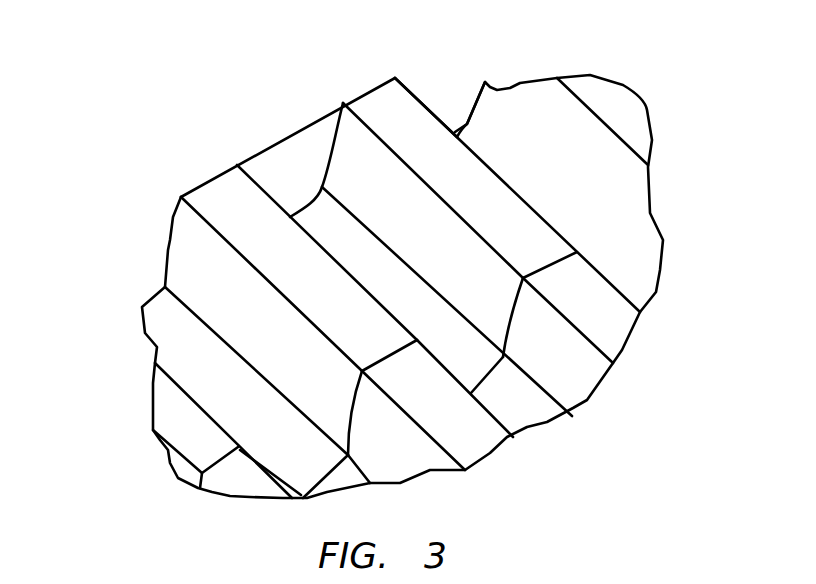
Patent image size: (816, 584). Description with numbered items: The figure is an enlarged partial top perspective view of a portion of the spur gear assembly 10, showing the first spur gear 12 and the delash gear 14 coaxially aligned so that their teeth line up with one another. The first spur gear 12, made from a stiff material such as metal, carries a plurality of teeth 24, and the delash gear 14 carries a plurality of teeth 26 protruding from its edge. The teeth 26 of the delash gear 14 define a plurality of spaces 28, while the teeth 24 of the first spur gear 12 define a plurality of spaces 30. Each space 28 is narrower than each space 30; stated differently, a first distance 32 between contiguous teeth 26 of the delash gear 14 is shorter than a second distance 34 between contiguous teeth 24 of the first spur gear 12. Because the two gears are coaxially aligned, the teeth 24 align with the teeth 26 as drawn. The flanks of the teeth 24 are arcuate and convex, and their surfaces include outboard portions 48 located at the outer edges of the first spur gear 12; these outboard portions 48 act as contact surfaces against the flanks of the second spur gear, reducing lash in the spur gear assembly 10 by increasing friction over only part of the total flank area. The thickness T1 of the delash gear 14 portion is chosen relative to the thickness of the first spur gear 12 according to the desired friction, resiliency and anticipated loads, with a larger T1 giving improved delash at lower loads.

The spur gear assembly 10 is at (115, 468).
The first spur gear 12 is at (468, 487).
The delash gear 14 is at (590, 77).
The teeth 24 is at (610, 330).
The teeth 26 is at (344, 103).
The spaces 28 is at (434, 88).
The spaces 30 is at (488, 397).
The first distance 32 is at (337, 107).
The second distance 34 is at (497, 390).
The outboard portions 48 is at (478, 99).
The thickness T1 is at (389, 355).